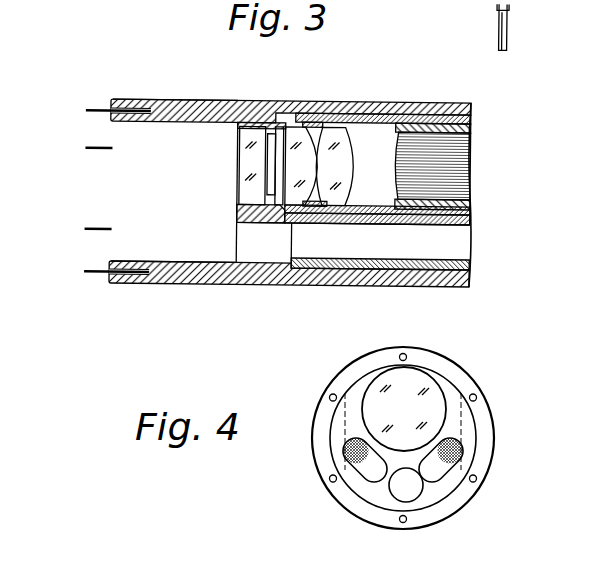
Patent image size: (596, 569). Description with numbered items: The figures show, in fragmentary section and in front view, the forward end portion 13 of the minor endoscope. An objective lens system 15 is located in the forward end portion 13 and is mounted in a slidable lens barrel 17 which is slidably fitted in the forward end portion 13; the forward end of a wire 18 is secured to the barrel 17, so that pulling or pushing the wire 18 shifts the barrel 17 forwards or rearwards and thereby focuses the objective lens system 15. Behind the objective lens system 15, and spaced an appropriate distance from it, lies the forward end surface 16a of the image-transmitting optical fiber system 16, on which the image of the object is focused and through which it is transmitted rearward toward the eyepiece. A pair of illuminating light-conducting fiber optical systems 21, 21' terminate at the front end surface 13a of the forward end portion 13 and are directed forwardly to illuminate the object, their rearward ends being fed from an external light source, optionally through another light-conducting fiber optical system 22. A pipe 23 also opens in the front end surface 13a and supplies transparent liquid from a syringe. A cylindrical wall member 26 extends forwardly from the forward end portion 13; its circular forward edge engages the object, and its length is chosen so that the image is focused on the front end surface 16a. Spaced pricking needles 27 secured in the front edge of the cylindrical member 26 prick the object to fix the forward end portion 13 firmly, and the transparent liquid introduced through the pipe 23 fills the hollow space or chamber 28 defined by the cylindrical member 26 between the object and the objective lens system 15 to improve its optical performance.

In FIG. 3, the forward end portion 13 is at (259, 292).
In FIG. 3, the front end surface 13a is at (226, 252).
In FIG. 4, the front end surface 13a is at (458, 445).
In FIG. 3, the objective lens system 15 is at (336, 124).
In FIG. 4, the objective lens system 15 is at (437, 413).
In FIG. 3, the image-transmitting optical fiber system 16 is at (474, 158).
In FIG. 3, the forward end surface 16a is at (399, 119).
In FIG. 3, the slidable lens barrel 17 is at (280, 124).
In FIG. 3, the wire 18 is at (369, 114).
In FIG. 4, the illuminating light-conducting fiber optical system 21 is at (333, 460).
In FIG. 4, the illuminating light-conducting fiber optical system 21' is at (479, 476).
In FIG. 3, the light-conducting fiber optical system 22 is at (507, 40).
In FIG. 3, the pipe 23 is at (340, 285).
In FIG. 4, the pipe 23 is at (405, 500).
In FIG. 3, the cylindrical wall member 26 is at (181, 102).
In FIG. 4, the cylindrical wall member 26 is at (463, 503).
In FIG. 3, the pricking needles 27 is at (95, 108).
In FIG. 4, the pricking needles 27 is at (408, 360).
In FIG. 3, the hollow space or chamber 28 is at (166, 256).